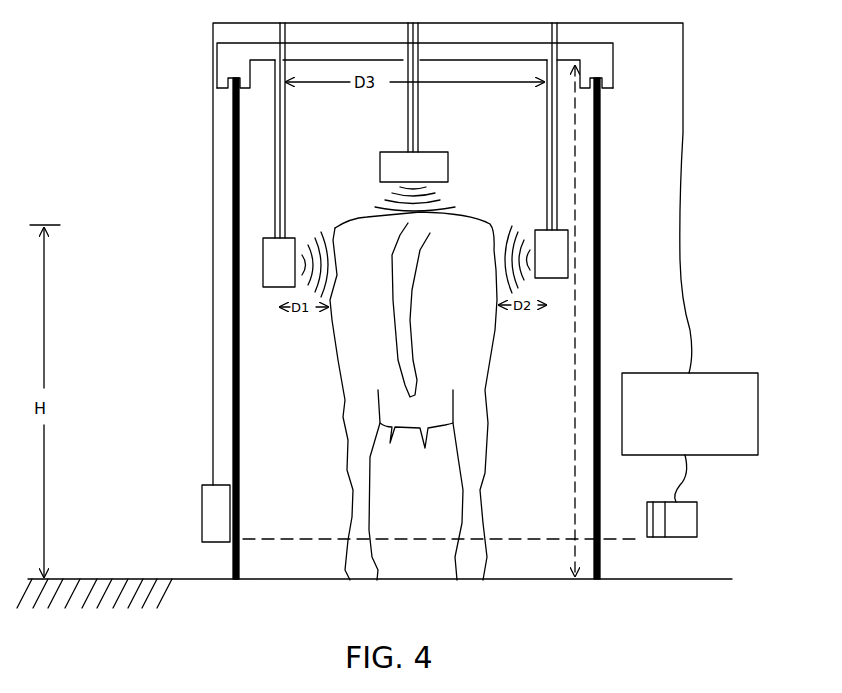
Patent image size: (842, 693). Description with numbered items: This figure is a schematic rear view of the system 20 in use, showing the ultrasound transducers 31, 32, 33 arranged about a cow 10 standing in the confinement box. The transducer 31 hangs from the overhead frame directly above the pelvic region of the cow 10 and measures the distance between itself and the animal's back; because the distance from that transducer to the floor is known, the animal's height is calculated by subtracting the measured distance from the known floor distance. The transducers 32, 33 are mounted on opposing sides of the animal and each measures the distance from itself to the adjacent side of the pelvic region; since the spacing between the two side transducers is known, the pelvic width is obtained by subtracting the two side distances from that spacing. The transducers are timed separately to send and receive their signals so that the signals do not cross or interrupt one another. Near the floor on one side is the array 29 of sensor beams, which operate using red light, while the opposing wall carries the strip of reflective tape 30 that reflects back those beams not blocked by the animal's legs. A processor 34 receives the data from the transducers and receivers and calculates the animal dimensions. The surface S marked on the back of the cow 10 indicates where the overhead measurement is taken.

The cow 10 is at (463, 375).
The system 20 is at (702, 122).
The array of sensor beams 29 is at (212, 510).
The strip of reflective tape 30 is at (680, 524).
The ultrasound transducer 31 is at (408, 165).
The ultrasound transducer 32 is at (287, 237).
The ultrasound transducer 33 is at (542, 237).
The processor 34 is at (690, 437).
The back surface of the animal S is at (366, 215).